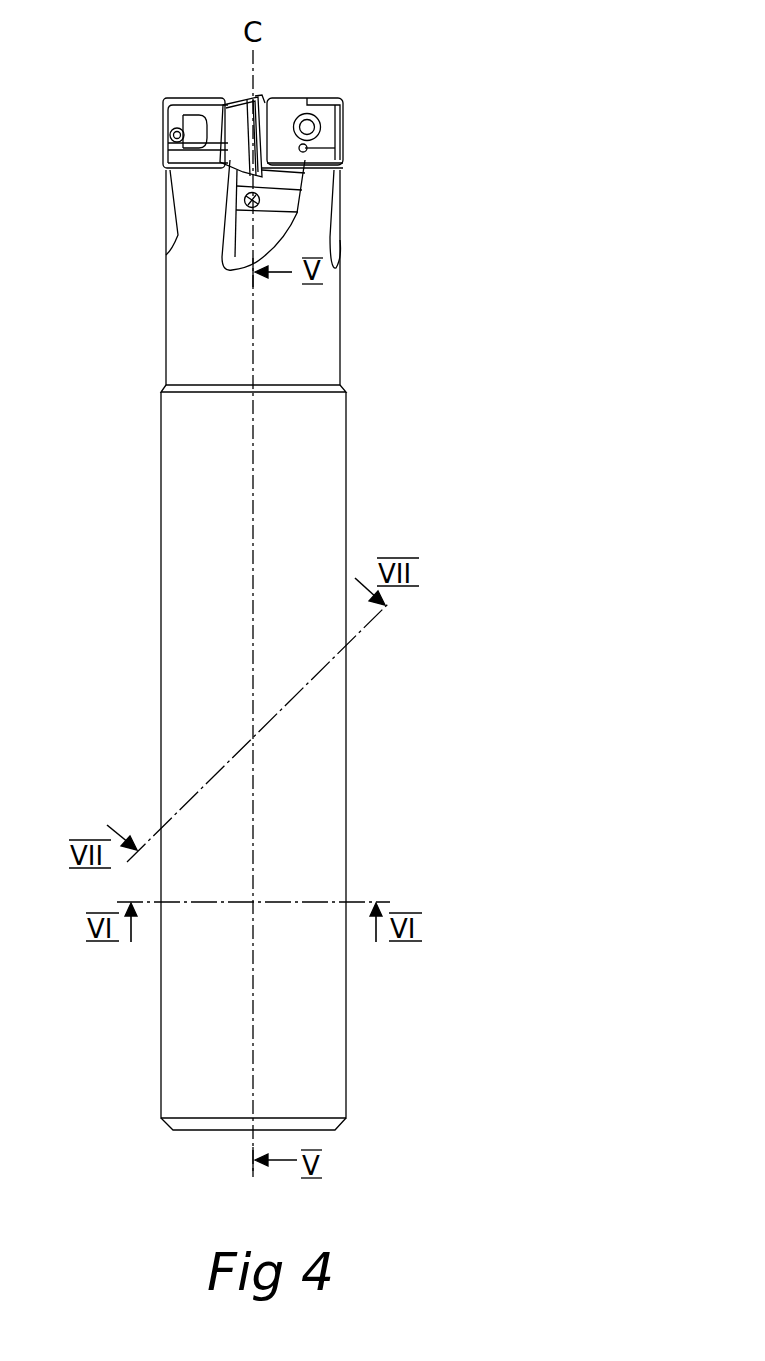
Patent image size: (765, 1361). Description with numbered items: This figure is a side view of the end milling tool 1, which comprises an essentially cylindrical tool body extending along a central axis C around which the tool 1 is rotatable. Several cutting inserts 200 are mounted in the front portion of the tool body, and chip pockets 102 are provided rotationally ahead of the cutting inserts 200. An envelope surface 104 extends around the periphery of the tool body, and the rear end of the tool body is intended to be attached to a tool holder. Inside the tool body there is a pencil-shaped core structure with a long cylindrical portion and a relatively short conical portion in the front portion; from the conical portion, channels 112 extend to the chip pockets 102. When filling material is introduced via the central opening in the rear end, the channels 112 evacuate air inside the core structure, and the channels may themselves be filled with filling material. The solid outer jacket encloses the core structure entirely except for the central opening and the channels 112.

The end milling tool 1 is at (128, 200).
The chip pockets 102 is at (282, 125).
The cutting inserts 200 is at (342, 120).
The channels 112 is at (262, 202).
The envelope surface 104 is at (310, 587).